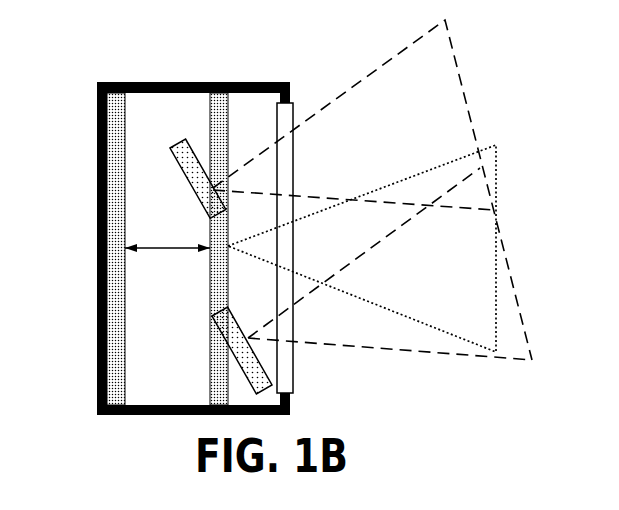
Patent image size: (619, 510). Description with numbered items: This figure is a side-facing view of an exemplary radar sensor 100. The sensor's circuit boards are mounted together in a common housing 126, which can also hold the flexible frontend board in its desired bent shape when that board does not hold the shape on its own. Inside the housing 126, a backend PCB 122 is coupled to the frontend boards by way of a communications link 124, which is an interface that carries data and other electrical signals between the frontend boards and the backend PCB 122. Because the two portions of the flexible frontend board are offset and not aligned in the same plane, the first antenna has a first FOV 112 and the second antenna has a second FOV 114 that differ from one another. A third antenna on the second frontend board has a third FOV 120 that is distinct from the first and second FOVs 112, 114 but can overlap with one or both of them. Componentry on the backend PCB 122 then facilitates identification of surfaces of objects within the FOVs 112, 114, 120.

The radar sensor 100 is at (150, 212).
The first FOV 112 is at (397, 52).
The second FOV 114 is at (516, 298).
The third FOV 120 is at (497, 157).
The backend PCB 122 is at (117, 178).
The communications link 124 is at (155, 250).
The housing 126 is at (100, 230).